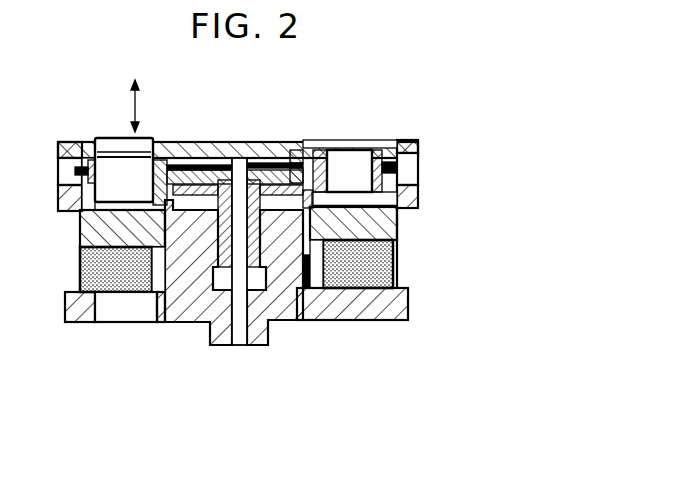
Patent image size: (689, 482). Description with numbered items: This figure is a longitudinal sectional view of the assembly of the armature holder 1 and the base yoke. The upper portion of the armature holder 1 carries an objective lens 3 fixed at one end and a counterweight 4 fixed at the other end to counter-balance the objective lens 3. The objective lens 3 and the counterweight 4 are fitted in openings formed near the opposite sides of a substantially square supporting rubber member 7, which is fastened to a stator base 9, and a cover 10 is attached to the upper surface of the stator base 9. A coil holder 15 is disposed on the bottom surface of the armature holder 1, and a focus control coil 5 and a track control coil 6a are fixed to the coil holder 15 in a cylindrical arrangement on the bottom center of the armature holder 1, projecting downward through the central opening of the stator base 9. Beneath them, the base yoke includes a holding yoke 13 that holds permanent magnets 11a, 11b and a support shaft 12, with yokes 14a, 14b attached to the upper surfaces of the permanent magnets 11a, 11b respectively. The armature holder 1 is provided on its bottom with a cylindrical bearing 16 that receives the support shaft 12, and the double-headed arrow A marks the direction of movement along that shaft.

The armature holder 1 is at (293, 170).
The objective lens 3 is at (113, 138).
The counterweight 4 is at (356, 150).
The focus control coil 5 is at (177, 320).
The track control coil 6a is at (318, 250).
The supporting rubber member 7 is at (200, 165).
The stator base 9 is at (62, 197).
The cover 10 is at (68, 143).
The permanent magnet 11a is at (395, 280).
The permanent magnet 11b is at (80, 278).
The support shaft 12 is at (238, 346).
The holding yoke 13 is at (78, 322).
The yoke 14a is at (382, 225).
The yoke 14b is at (90, 225).
The coil holder 15 is at (262, 163).
The cylindrical bearing 16 is at (262, 250).
The direction of movement A is at (138, 105).